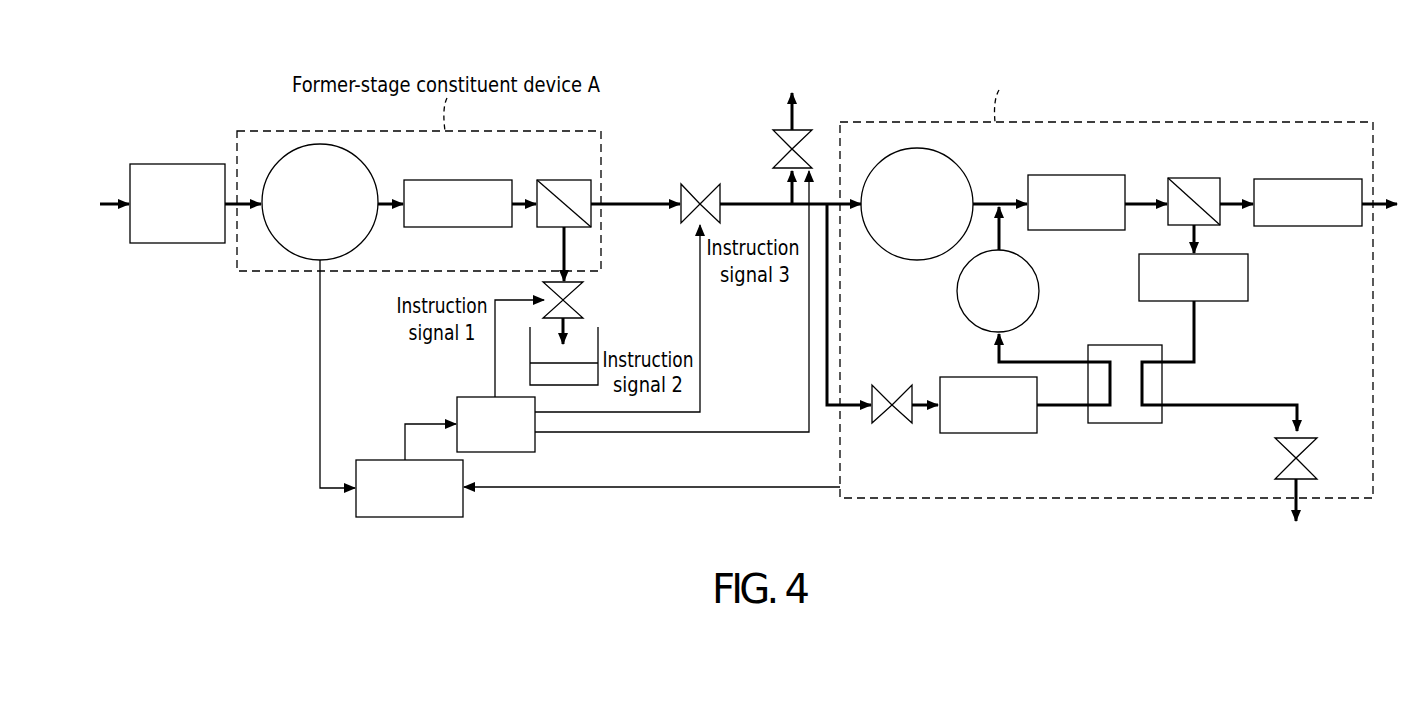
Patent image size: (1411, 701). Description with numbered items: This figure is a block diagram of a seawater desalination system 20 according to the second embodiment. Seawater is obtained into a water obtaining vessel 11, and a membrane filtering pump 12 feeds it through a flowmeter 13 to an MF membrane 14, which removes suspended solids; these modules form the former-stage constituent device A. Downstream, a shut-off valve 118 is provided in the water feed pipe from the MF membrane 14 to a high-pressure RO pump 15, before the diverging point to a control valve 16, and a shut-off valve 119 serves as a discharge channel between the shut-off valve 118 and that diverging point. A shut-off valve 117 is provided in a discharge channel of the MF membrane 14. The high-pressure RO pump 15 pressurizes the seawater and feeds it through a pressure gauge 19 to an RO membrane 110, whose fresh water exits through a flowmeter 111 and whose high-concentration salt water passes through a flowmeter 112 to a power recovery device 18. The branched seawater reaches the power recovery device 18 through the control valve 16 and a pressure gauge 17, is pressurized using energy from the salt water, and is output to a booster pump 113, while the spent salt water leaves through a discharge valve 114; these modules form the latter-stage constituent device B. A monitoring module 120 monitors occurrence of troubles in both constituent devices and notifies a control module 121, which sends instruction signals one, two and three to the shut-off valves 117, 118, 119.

The water obtaining vessel 11 is at (178, 245).
The membrane filtering pump 12 is at (361, 161).
The flowmeter 13 is at (465, 179).
The MF membrane 14 is at (563, 179).
The high-pressure RO pump 15 is at (912, 261).
The control valve 16 is at (890, 424).
The pressure gauge 17 is at (990, 434).
The power recovery device 18 is at (1128, 424).
The pressure gauge 19 is at (1078, 174).
The seawater desalination system 20 is at (1177, 99).
The RO membrane 110 is at (1222, 181).
The flowmeter 111 is at (1305, 178).
The flowmeter 112 is at (1250, 278).
The booster pump 113 is at (1042, 288).
The discharge valve 114 is at (1319, 458).
The shut-off valve 117 is at (584, 300).
The shut-off valve 118 is at (701, 183).
The shut-off valve 119 is at (780, 128).
The monitoring module 120 is at (372, 459).
The control module 121 is at (468, 396).